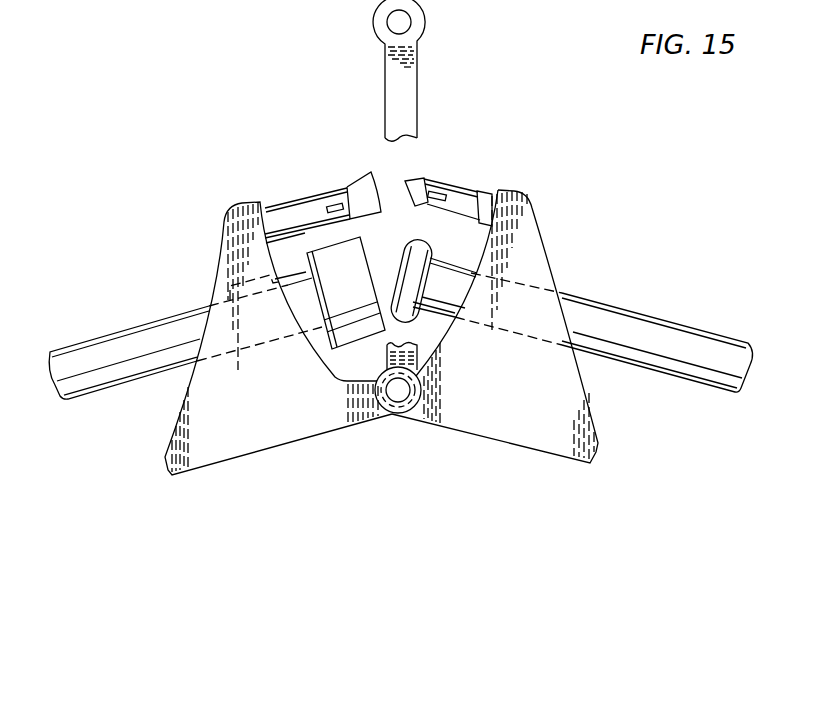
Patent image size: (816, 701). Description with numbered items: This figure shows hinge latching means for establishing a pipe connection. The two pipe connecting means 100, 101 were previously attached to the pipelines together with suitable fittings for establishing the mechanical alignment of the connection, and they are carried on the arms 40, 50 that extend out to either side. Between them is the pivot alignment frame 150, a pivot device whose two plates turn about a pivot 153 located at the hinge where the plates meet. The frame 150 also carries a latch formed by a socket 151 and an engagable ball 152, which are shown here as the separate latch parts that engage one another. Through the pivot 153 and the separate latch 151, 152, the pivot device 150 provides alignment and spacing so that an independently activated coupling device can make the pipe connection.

The right arm 40 is at (677, 330).
The left arm 50 is at (105, 348).
The pipe connecting means 100 is at (417, 313).
The pipe connecting means 101 is at (323, 247).
The pivot alignment frame 150 is at (232, 248).
The socket 151 is at (362, 185).
The engagable ball 152 is at (445, 200).
The pivot 153 is at (403, 393).